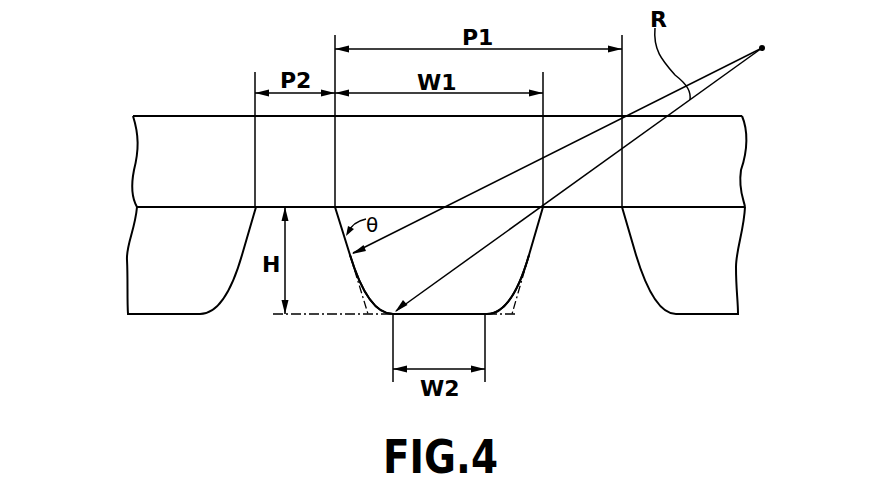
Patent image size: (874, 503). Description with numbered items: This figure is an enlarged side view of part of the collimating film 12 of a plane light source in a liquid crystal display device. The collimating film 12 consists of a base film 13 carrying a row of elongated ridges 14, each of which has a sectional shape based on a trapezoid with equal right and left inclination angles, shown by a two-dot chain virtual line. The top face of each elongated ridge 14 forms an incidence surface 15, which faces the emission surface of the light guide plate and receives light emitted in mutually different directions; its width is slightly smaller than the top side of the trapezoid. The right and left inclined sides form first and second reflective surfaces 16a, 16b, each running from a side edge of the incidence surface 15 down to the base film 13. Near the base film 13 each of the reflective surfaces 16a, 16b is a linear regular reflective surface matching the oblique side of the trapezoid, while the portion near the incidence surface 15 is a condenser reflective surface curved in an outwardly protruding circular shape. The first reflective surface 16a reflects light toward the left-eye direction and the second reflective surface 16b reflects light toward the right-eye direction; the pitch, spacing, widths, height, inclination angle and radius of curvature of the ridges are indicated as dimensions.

The collimating film 12 is at (157, 103).
The base film 13 is at (165, 163).
The elongated ridge 14 is at (173, 285).
The incidence surface 15 is at (447, 315).
The first reflective surface 16a is at (513, 295).
The second reflective surface 16b is at (372, 300).